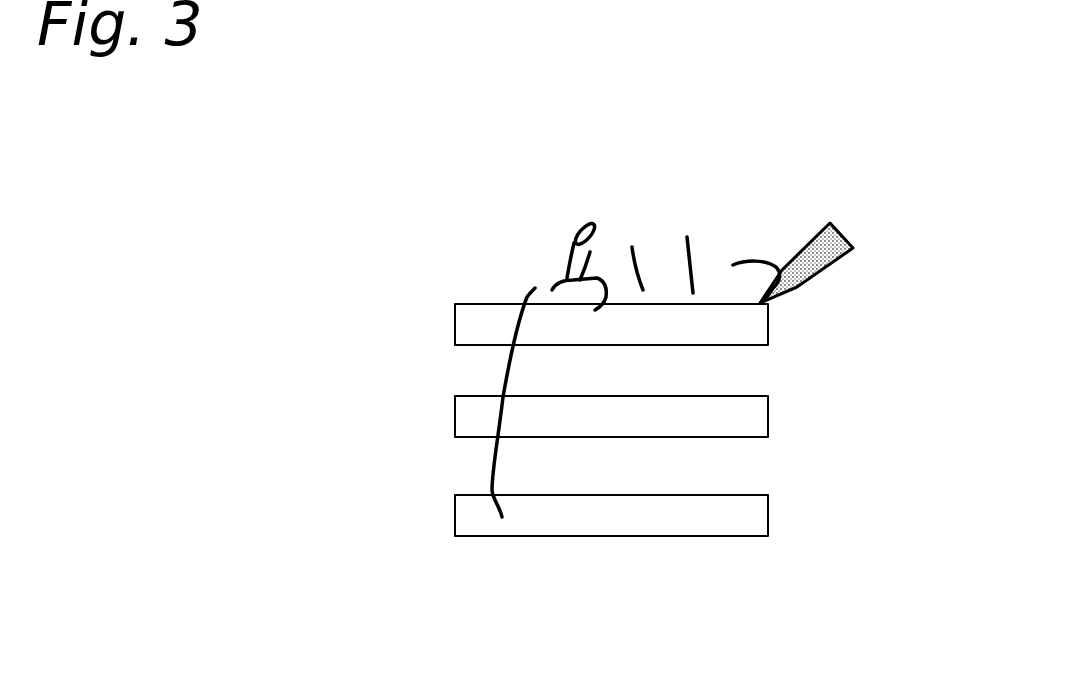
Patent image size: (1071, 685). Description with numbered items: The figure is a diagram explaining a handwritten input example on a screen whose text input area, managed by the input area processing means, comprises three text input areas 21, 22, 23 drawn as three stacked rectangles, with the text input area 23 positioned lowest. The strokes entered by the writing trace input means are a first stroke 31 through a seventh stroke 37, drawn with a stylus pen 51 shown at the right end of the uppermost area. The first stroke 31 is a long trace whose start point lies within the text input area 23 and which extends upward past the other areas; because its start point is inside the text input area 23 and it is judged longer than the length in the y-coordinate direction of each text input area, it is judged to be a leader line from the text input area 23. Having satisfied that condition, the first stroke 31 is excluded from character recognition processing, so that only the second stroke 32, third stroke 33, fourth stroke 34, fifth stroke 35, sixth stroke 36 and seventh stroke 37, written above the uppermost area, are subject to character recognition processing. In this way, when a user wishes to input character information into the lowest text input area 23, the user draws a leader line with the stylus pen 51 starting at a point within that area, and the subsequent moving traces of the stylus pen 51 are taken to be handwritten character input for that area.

The text input area 21 is at (455, 320).
The text input area 22 is at (455, 413).
The text input area 23 is at (455, 512).
The first stroke 31 is at (513, 332).
The second stroke 32 is at (578, 230).
The third stroke 33 is at (597, 265).
The fourth stroke 34 is at (633, 247).
The fifth stroke 35 is at (690, 247).
The sixth stroke 36 is at (748, 238).
The seventh stroke 37 is at (765, 267).
The stylus pen 51 is at (837, 262).